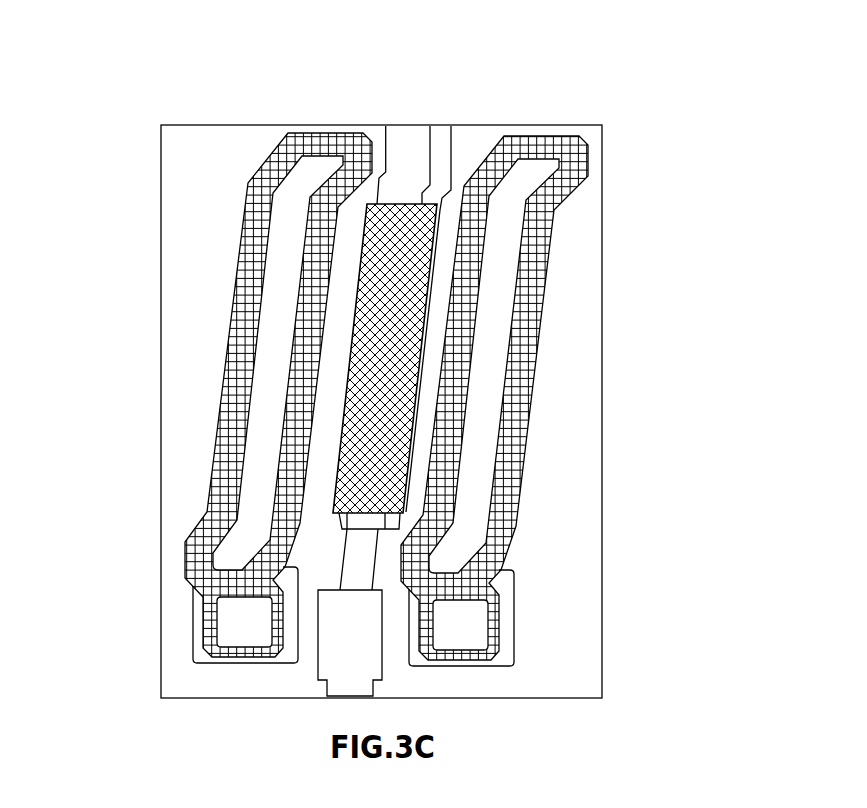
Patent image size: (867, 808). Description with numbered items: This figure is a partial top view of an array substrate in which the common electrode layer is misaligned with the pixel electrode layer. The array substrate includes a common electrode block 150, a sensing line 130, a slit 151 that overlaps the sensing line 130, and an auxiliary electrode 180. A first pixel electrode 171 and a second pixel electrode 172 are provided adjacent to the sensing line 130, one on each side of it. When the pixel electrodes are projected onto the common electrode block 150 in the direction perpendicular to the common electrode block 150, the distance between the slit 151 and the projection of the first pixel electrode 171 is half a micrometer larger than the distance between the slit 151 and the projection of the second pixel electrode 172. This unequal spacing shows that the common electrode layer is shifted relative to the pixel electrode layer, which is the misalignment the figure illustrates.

The sensing line 130 is at (406, 176).
The common electrode block 150 is at (545, 393).
The slit 151 is at (445, 158).
The first pixel electrode 171 is at (253, 183).
The second pixel electrode 172 is at (467, 245).
The auxiliary electrode 180 is at (386, 383).